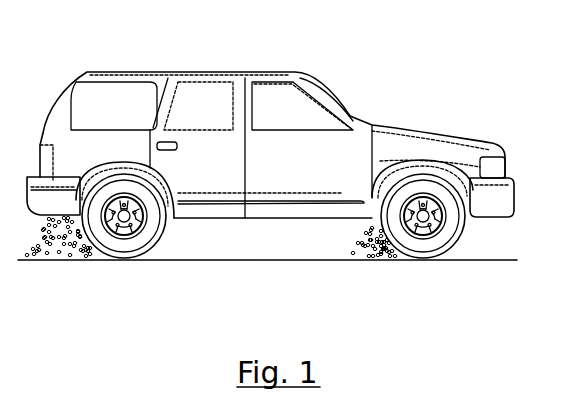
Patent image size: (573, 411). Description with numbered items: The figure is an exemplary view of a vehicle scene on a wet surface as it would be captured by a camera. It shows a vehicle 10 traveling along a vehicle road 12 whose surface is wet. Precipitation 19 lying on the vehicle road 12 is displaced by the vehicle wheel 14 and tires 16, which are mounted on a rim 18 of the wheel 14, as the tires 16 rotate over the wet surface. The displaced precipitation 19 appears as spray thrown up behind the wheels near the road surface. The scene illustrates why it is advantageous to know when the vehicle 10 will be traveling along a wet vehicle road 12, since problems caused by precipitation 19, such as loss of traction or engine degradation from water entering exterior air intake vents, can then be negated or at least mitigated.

The vehicle 10 is at (295, 172).
The vehicle road 12 is at (165, 260).
The vehicle wheel 14 is at (472, 248).
The tires 16 is at (450, 242).
The rim 18 is at (444, 217).
The precipitation 19 is at (373, 253).